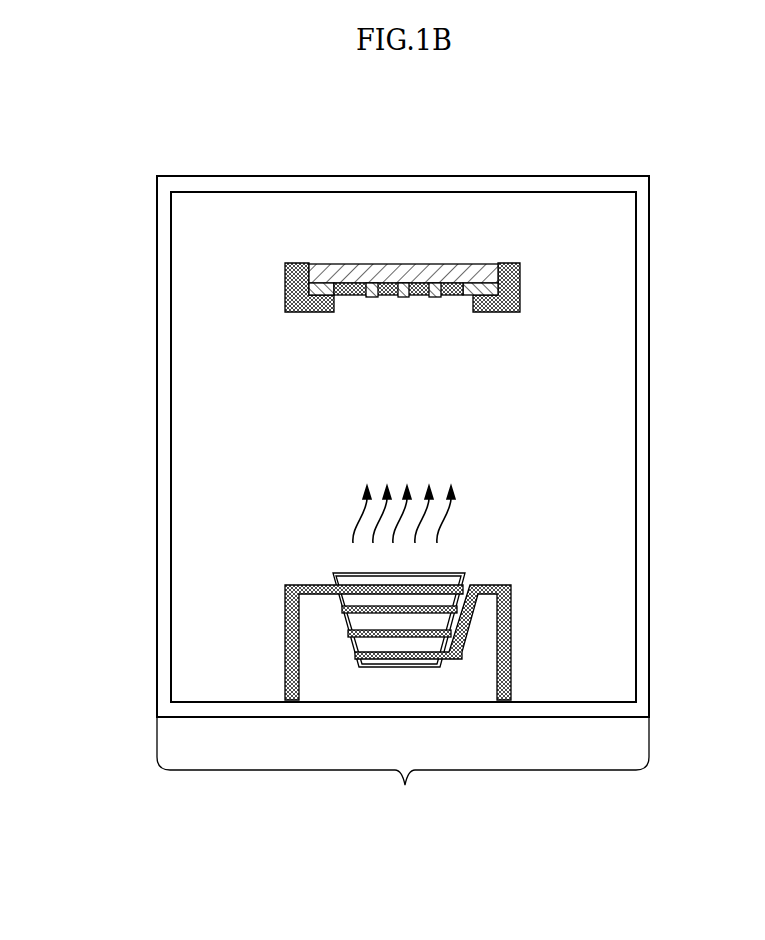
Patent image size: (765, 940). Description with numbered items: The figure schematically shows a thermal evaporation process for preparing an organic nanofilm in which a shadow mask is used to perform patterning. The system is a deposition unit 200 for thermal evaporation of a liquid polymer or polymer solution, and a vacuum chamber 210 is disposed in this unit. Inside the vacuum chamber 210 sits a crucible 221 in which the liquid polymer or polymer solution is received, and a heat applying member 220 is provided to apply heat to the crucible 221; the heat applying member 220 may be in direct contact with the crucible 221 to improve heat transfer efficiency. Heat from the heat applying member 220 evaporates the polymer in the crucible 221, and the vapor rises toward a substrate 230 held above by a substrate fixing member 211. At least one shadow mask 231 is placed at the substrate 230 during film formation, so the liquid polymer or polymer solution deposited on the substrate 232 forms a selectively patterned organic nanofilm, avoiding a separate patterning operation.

The deposition unit 200 is at (403, 767).
The vacuum chamber 210 is at (165, 703).
The substrate fixing member 211 is at (310, 313).
The heat applying member 220 is at (285, 605).
The crucible 221 is at (347, 576).
The substrate 230 is at (441, 264).
The shadow mask 231 is at (370, 297).
The liquid polymer or polymer solution deposited on substrate 232 is at (452, 297).